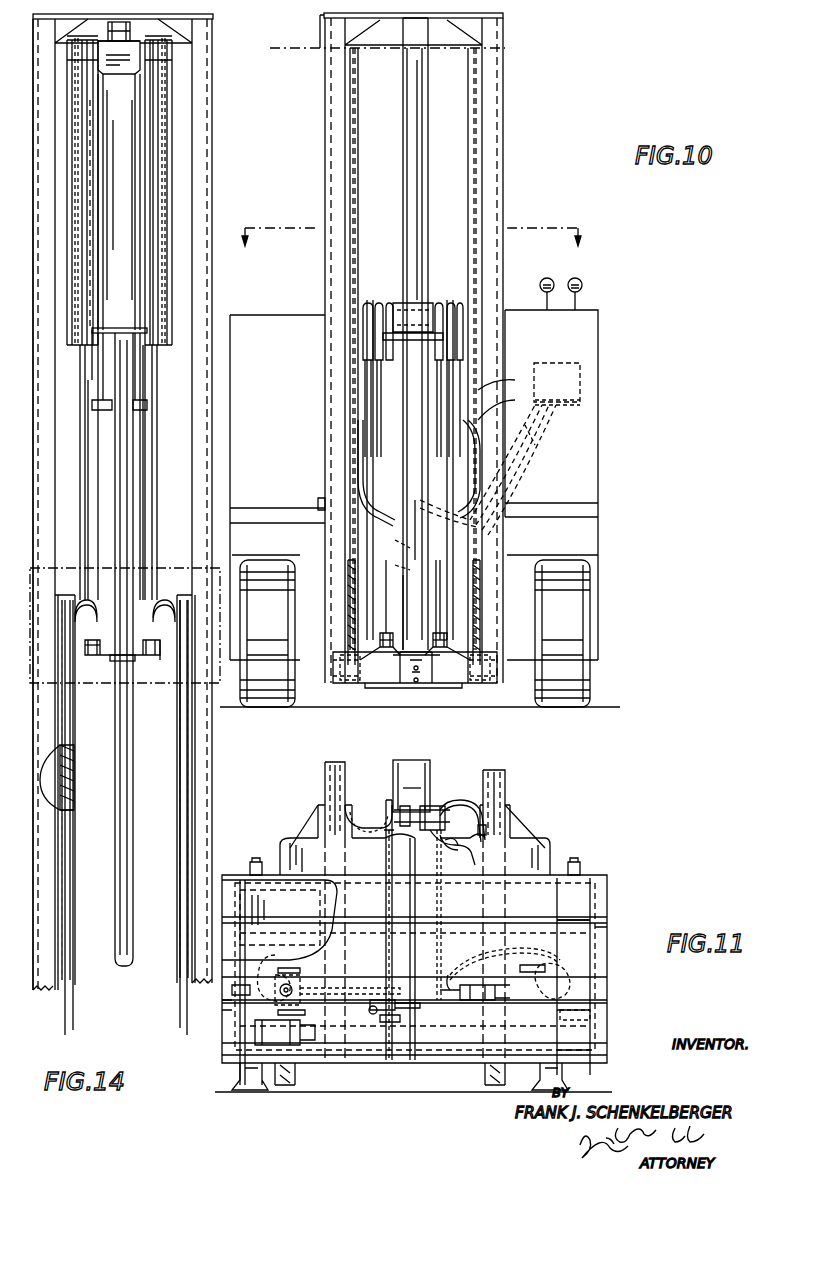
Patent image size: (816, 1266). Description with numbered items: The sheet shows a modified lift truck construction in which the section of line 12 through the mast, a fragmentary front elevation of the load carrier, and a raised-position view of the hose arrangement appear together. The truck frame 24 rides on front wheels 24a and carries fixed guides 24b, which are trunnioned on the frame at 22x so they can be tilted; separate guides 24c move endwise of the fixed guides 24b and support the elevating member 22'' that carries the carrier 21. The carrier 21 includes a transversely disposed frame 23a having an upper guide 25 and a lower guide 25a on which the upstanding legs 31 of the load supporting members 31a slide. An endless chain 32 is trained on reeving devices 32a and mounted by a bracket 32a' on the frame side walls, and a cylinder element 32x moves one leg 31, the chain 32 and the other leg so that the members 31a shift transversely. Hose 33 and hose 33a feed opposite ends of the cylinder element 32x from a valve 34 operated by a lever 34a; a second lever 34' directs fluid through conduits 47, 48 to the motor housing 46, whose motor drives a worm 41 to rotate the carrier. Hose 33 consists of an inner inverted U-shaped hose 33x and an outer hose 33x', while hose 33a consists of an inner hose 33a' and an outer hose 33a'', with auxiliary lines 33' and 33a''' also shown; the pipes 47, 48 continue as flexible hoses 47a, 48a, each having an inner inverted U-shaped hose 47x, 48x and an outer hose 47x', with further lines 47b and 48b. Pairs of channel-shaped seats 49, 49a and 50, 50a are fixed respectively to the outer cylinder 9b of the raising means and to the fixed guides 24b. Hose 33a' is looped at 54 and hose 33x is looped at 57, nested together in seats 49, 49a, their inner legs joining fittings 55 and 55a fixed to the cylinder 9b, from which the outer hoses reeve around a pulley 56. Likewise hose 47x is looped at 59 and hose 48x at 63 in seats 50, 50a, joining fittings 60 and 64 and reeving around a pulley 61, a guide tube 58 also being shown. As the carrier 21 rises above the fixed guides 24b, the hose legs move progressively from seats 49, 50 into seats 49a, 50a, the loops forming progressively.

In FIG. 14, the outer cylinder 9b is at (130, 473).
In FIG. 11, the outer cylinder 9b is at (418, 770).
In FIG. 10, the section line 12 is at (421, 254).
In FIG. 11, the carrier 21 is at (636, 907).
In FIG. 10, the trunnion 22x is at (318, 503).
In FIG. 10, the bracket 22'' is at (414, 612).
In FIG. 11, the frame 23a is at (604, 932).
In FIG. 10, the truck frame 24 is at (585, 515).
In FIG. 11, the truck frame 24 is at (507, 812).
In FIG. 10, the front wheels 24a is at (575, 682).
In FIG. 14, the fixed guides 24b is at (236, 762).
In FIG. 10, the fixed guides 24b is at (495, 139).
In FIG. 11, the fixed guides 24b is at (320, 810).
In FIG. 14, the movable guides 24c is at (211, 108).
In FIG. 10, the movable guides 24c is at (495, 101).
In FIG. 11, the movable guides 24c is at (326, 775).
In FIG. 11, the upper guide 25 is at (262, 868).
In FIG. 11, the lower guide 25a is at (310, 1042).
In FIG. 11, the legs 31 is at (268, 905).
In FIG. 11, the load supporting members 31a is at (615, 1068).
In FIG. 11, the endless flexible member 32 is at (280, 952).
In FIG. 11, the reeving devices 32a is at (589, 977).
In FIG. 11, the sprocket bracket 32a' is at (214, 1016).
In FIG. 11, the cylinder element 32x is at (290, 970).
In FIG. 10, the hose 33 is at (524, 427).
In FIG. 11, the hose 33 is at (500, 963).
In FIG. 14, the hydraulic line 33' is at (74, 230).
In FIG. 14, the hose 33a is at (74, 777).
In FIG. 10, the hose 33a is at (531, 466).
In FIG. 11, the hose 33a is at (378, 1055).
In FIG. 14, the inner inverted U-shaped hose 33a' is at (74, 490).
In FIG. 10, the inner inverted U-shaped hose 33a' is at (411, 541).
In FIG. 10, the outer flexible hose 33a'' is at (413, 564).
In FIG. 14, the hydraulic line 33a''' is at (116, 355).
In FIG. 14, the inner inverted U-shaped hose 33x is at (84, 806).
In FIG. 10, the inner inverted U-shaped hose 33x is at (416, 515).
In FIG. 10, the outer flexible hose 33x' is at (376, 600).
In FIG. 10, the valve 34 is at (583, 382).
In FIG. 11, the valve 34 is at (412, 780).
In FIG. 10, the lever 34' is at (536, 294).
In FIG. 10, the lever 34a is at (578, 296).
In FIG. 11, the worm 41 is at (365, 806).
In FIG. 11, the motor housing 46 is at (405, 832).
In FIG. 11, the conduit 47 is at (460, 800).
In FIG. 11, the flexible hose 47a is at (498, 810).
In FIG. 10, the hydraulic line 47b is at (560, 442).
In FIG. 10, the inner inverted U-shaped hose 47x is at (528, 511).
In FIG. 10, the outer flexible hose 47x' is at (419, 600).
In FIG. 11, the conduit 48 is at (447, 862).
In FIG. 11, the flexible hose 48a is at (450, 845).
In FIG. 10, the hydraulic line 48b is at (560, 458).
In FIG. 10, the inner inverted U-shaped hose 48x is at (440, 632).
In FIG. 10, the seat 49 is at (380, 440).
In FIG. 14, the seat 49a is at (75, 856).
In FIG. 10, the seat 49a is at (352, 160).
In FIG. 14, the seat 50 is at (146, 406).
In FIG. 10, the seat 50 is at (470, 140).
In FIG. 14, the seat 50a is at (178, 856).
In FIG. 14, the loop 54 is at (80, 596).
In FIG. 10, the loop 54 is at (360, 408).
In FIG. 14, the fitting 55 is at (98, 650).
In FIG. 10, the fitting 55 is at (395, 660).
In FIG. 14, the fitting 55a is at (90, 656).
In FIG. 10, the fitting 55a is at (380, 660).
In FIG. 14, the pulley 56 is at (88, 42).
In FIG. 10, the pulley 56 is at (376, 303).
In FIG. 14, the loop 57 is at (84, 618).
In FIG. 14, the chain guide tube 58 is at (73, 64).
In FIG. 10, the loop 59 is at (505, 379).
In FIG. 14, the fitting 60 is at (145, 656).
In FIG. 10, the fitting 60 is at (430, 660).
In FIG. 10, the pulley 61 is at (446, 303).
In FIG. 10, the loop 63 is at (505, 404).
In FIG. 14, the fitting 64 is at (165, 660).
In FIG. 10, the fitting 64 is at (447, 660).